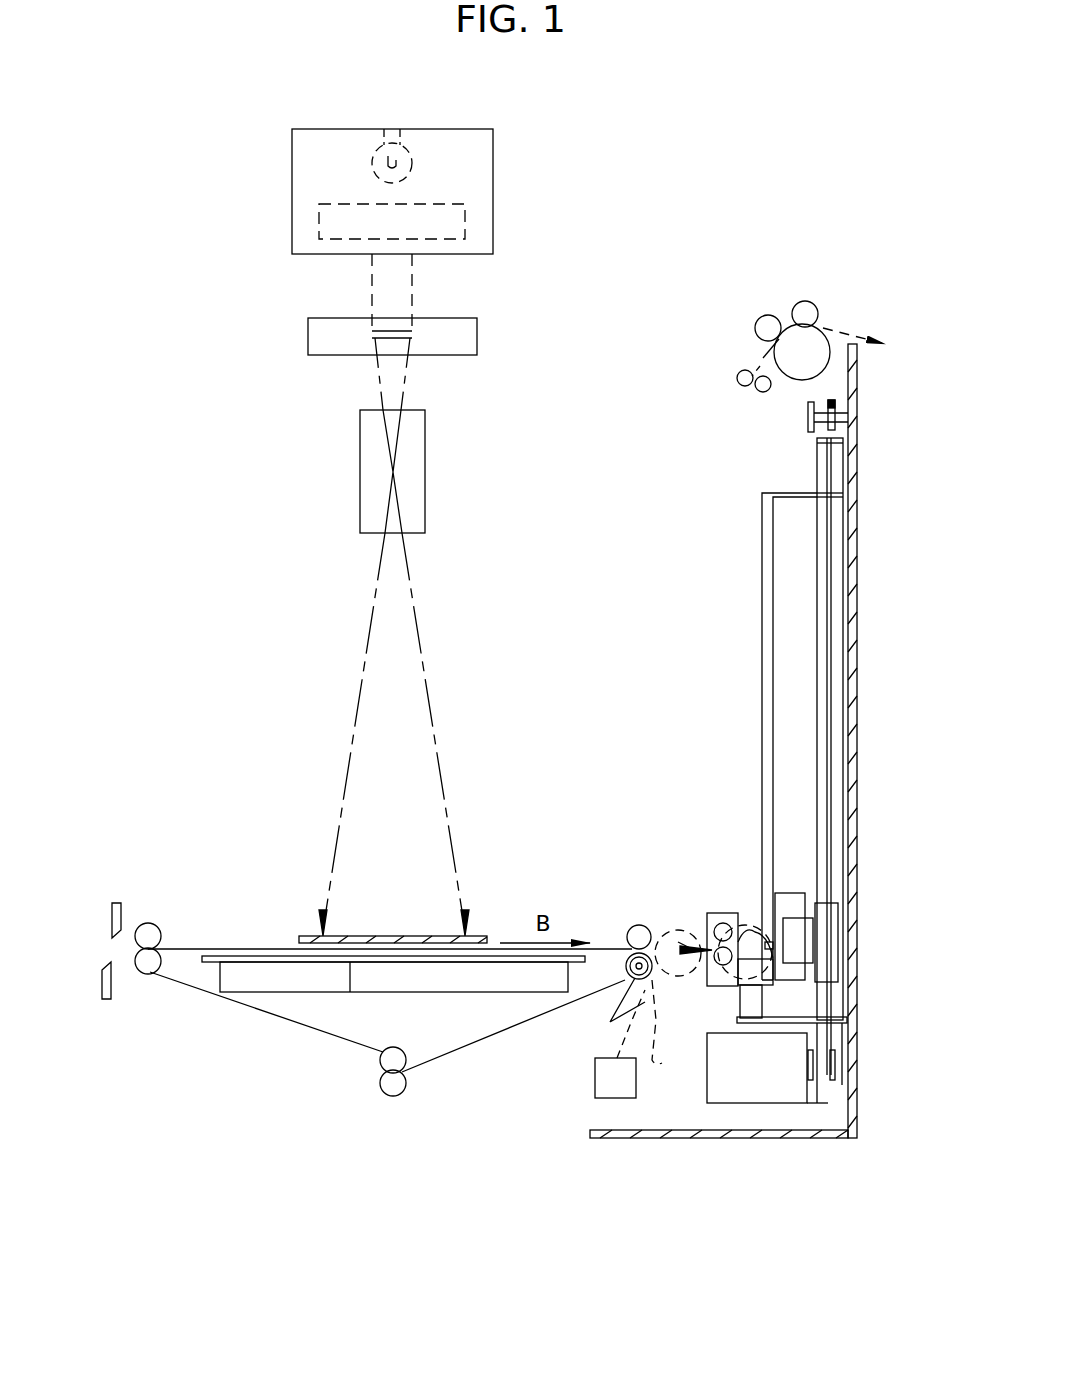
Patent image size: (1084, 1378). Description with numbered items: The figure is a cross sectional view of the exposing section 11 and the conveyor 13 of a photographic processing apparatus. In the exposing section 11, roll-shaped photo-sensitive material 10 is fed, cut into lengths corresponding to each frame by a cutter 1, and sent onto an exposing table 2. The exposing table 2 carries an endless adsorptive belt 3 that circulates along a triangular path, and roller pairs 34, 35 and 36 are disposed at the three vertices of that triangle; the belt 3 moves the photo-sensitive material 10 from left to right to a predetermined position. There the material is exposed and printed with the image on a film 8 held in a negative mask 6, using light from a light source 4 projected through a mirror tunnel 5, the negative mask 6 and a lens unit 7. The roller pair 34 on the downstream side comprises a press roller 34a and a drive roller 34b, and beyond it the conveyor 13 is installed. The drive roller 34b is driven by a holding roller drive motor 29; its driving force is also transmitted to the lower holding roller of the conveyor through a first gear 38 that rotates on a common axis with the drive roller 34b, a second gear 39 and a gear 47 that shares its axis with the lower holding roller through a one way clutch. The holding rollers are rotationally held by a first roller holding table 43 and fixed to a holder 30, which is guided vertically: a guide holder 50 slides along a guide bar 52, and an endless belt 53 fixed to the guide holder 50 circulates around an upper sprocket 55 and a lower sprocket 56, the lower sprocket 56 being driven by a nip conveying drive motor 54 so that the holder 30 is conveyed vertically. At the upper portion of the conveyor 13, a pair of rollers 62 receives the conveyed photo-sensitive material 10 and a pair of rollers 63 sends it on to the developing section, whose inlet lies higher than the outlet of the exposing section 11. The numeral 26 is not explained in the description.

The cutter 1 is at (114, 856).
The exposing table 2 is at (350, 962).
The adsorptive belt 3 is at (262, 1023).
The light source 4 is at (413, 168).
The mirror tunnel 5 is at (465, 222).
The negative mask 6 is at (478, 337).
The lens unit 7 is at (425, 476).
The film 8 is at (390, 331).
The photo-sensitive material 10 is at (410, 936).
The exposing section 11 is at (180, 574).
The conveyor 13 is at (642, 772).
The frame 26 is at (762, 557).
The holding roller drive motor 29 is at (605, 1080).
The holder 30 is at (792, 918).
The roller pair 34 is at (562, 957).
The press roller 34a is at (628, 933).
The drive roller 34b is at (632, 976).
The roller pair 35 is at (157, 955).
The roller pair 36 is at (383, 1092).
The first gear 38 is at (759, 1063).
The second gear 39 is at (660, 928).
The first roller holding table 43 is at (722, 913).
The gear 47 is at (730, 985).
The guide holder 50 is at (828, 945).
The guide bar 52 is at (826, 593).
The endless belt 53 is at (817, 457).
The nip conveying drive motor 54 is at (753, 1083).
The upper sprocket 55 is at (810, 413).
The lower sprocket 56 is at (833, 1087).
The pair of rollers 62 is at (763, 390).
The pair of rollers 63 is at (805, 303).